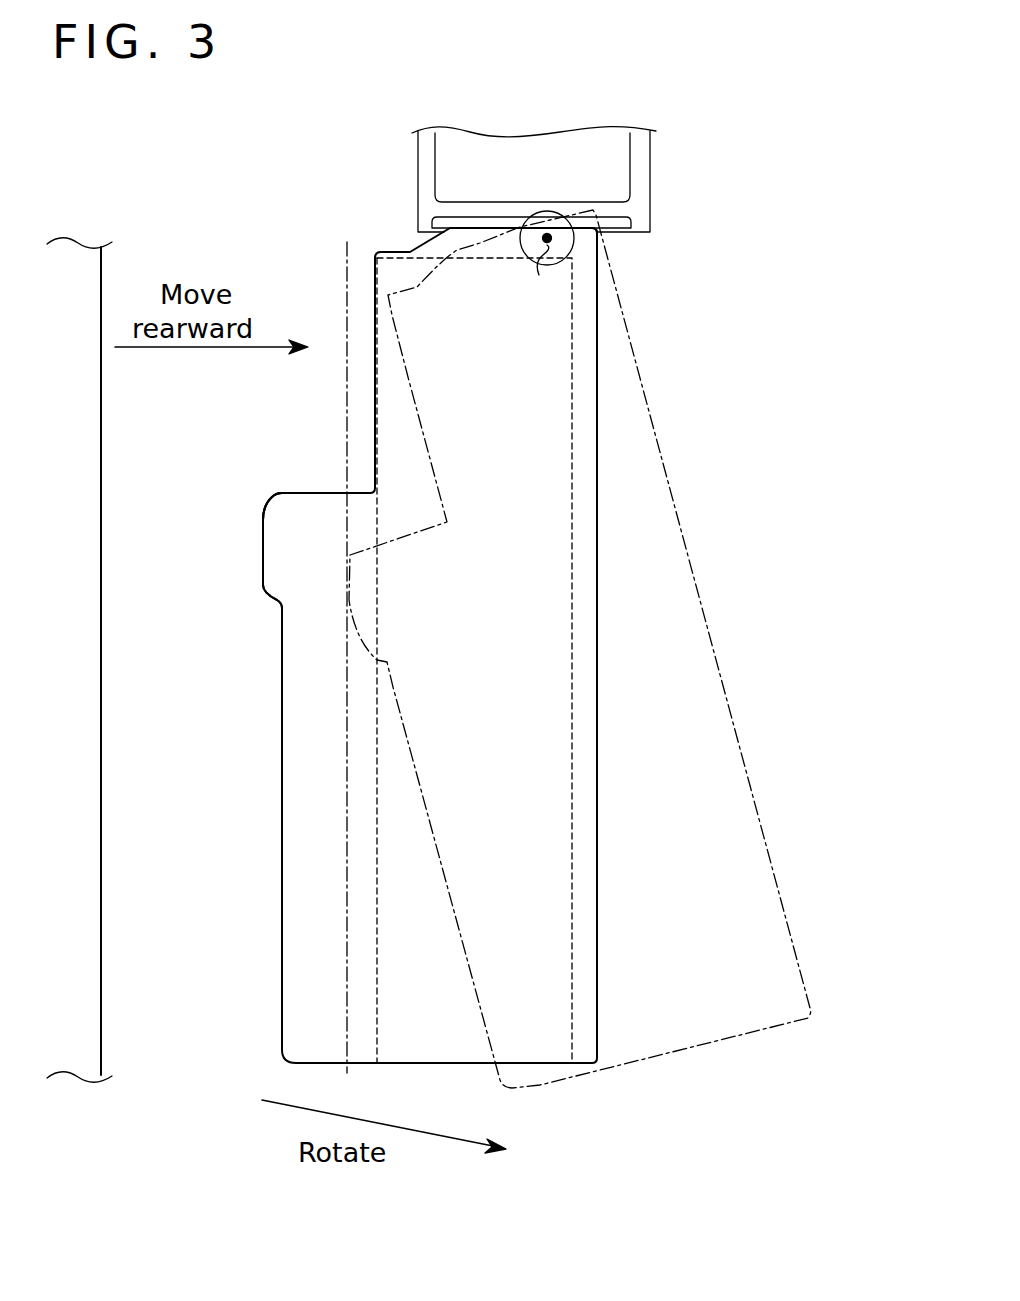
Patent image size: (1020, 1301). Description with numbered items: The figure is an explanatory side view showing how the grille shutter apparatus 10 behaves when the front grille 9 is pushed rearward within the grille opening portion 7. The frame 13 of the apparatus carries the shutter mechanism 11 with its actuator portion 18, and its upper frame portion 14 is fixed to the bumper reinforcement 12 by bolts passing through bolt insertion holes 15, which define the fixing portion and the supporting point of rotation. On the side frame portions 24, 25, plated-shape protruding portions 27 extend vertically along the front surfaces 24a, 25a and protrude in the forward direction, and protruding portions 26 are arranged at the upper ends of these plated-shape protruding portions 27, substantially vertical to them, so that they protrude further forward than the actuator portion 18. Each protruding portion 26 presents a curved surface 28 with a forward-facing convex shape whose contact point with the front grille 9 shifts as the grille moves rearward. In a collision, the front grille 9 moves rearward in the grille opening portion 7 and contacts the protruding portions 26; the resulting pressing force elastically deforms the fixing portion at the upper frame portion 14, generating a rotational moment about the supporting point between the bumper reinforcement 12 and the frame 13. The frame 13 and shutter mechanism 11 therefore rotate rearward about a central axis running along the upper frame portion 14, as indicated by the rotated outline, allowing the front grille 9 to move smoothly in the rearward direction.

The grille opening portion 7 is at (168, 684).
The front grille 9 is at (71, 641).
The grille shutter apparatus 10 is at (358, 242).
The shutter mechanism 11 is at (578, 838).
The bumper reinforcement 12 is at (652, 168).
The frame 13 is at (598, 655).
The upper frame portion 14 is at (597, 243).
The bolt insertion holes 15 is at (535, 214).
The actuator portion 18 is at (551, 660).
The side frame portion 24 is at (430, 677).
The front surface 24a is at (580, 649).
The side frame portion 25 is at (417, 1055).
The front surface 25a is at (377, 404).
The protruding portion 26 is at (275, 548).
The plated-shape protruding portion 27 is at (324, 1048).
The curved surface 28 is at (271, 495).